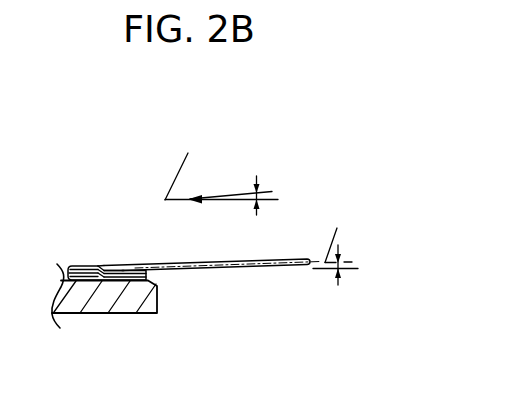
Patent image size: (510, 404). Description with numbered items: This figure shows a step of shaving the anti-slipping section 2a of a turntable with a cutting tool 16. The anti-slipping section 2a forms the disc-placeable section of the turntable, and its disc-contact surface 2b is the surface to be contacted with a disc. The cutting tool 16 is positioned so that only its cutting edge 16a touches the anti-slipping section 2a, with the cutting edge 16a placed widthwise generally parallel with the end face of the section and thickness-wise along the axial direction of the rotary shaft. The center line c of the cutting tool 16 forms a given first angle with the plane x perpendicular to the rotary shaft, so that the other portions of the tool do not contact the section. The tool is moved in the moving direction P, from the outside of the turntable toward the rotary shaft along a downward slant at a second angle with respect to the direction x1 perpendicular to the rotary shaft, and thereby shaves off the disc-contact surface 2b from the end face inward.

The anti-slipping section 2a is at (82, 266).
The disc-contact surface 2b is at (125, 270).
The cutting tool 16 is at (304, 258).
The cutting edge 16a is at (108, 264).
The direction X1 x1 is at (221, 163).
The plane X x is at (319, 268).
The moving direction P is at (230, 184).
The center line c is at (338, 232).